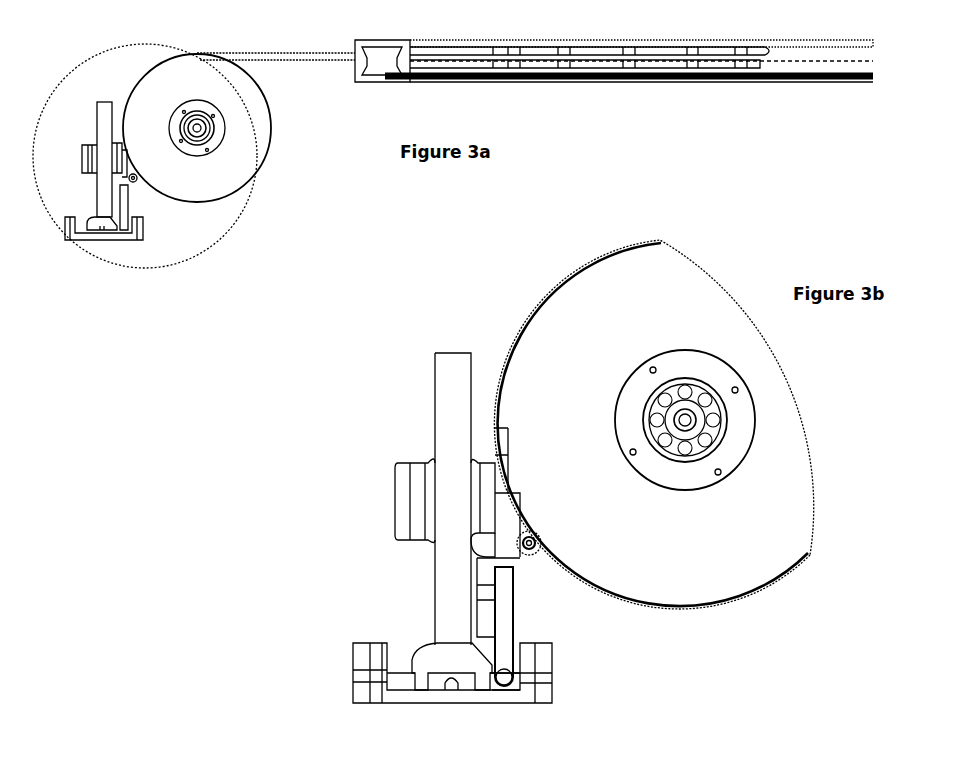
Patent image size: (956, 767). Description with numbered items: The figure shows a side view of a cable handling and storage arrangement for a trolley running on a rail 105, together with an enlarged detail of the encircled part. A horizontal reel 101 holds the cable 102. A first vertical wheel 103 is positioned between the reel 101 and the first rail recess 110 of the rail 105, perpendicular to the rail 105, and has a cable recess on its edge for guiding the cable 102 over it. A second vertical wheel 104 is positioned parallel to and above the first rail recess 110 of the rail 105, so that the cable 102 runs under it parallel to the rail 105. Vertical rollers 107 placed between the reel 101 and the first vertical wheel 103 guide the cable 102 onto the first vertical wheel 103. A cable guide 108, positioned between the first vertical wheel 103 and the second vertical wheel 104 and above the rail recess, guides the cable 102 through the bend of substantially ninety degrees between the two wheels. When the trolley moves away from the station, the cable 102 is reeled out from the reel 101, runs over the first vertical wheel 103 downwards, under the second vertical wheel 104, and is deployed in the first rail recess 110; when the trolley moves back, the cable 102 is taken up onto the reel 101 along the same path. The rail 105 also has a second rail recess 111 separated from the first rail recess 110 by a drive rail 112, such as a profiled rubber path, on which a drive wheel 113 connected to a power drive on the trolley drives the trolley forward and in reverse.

In FIG. 3A, the reel 101 is at (678, 83).
In FIG. 3A, the cable 102 is at (305, 56).
In FIG. 3B, the cable 102 is at (505, 676).
In FIG. 3B, the first vertical wheel 103 is at (653, 424).
In FIG. 3B, the second vertical wheel 104 is at (500, 615).
In FIG. 3B, the rail 105 is at (358, 652).
In FIG. 3A, the vertical rollers 107 is at (376, 60).
In FIG. 3B, the cable guide 108 is at (520, 552).
In FIG. 3B, the first rail recess 110 is at (513, 687).
In FIG. 3B, the second rail recess 111 is at (400, 677).
In FIG. 3B, the drive rail 112 is at (430, 655).
In FIG. 3B, the drive wheel 113 is at (457, 499).